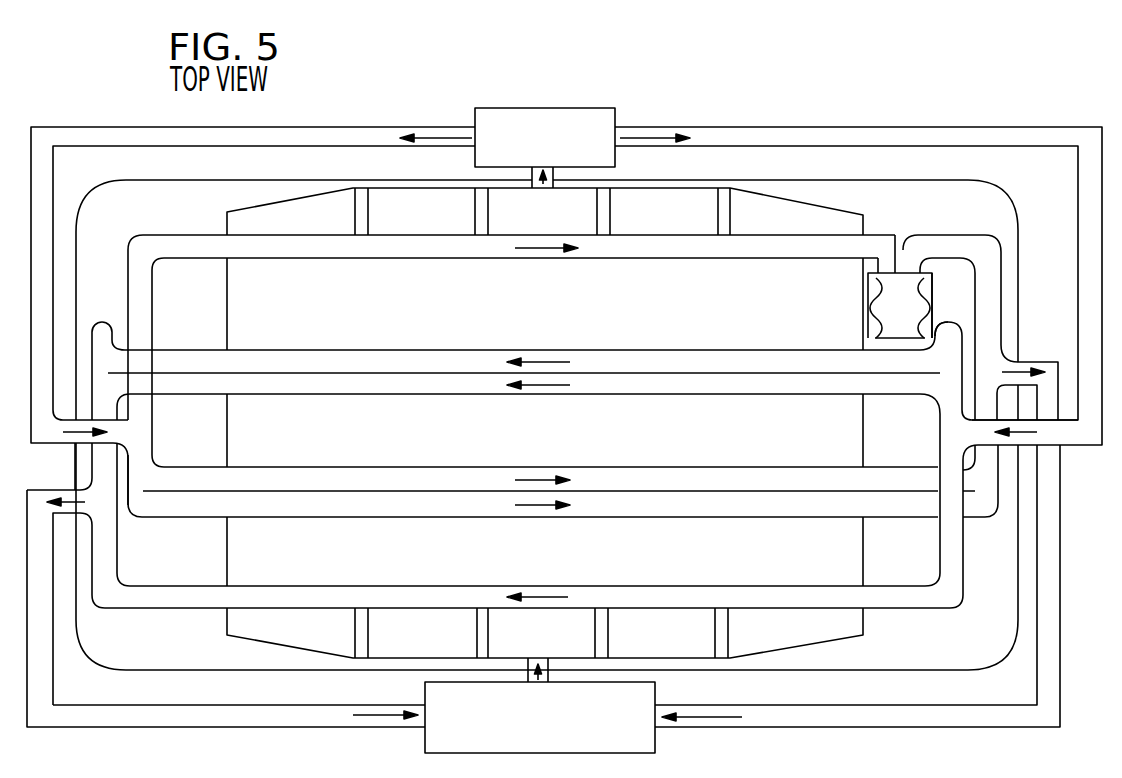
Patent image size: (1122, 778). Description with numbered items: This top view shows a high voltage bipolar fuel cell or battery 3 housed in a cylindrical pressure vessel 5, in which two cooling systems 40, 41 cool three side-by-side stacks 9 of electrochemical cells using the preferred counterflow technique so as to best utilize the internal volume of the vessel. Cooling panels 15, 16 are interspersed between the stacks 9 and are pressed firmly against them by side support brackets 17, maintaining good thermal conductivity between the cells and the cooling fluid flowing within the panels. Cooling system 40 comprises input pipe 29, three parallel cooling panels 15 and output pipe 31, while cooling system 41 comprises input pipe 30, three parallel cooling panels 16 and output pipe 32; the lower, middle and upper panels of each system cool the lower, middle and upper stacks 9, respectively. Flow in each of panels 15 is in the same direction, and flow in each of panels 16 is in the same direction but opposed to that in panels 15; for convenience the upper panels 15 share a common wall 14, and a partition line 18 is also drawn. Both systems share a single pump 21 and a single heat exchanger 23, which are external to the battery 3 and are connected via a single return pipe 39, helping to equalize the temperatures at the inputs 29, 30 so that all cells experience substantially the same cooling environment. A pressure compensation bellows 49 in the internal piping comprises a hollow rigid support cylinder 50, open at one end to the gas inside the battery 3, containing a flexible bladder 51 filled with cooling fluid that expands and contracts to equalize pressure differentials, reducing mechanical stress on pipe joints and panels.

The battery 3 is at (1021, 253).
The pressure vessel 5 is at (920, 181).
The stack 9 is at (649, 324).
The common wall 14 is at (430, 373).
The cooling panel 15 is at (388, 355).
The cooling panel 16 is at (797, 250).
The side support bracket 17 is at (673, 226).
The partition line 18 is at (815, 468).
The pump 21 is at (592, 108).
The heat exchanger 23 is at (655, 745).
The input pipe 29 is at (838, 137).
The input pipe 30 is at (350, 137).
The output pipe 31 is at (290, 720).
The output pipe 32 is at (833, 720).
The return pipe 39 is at (554, 187).
The cooling system 40 is at (97, 609).
The cooling system 41 is at (137, 239).
The pressure compensation bellows 49 is at (933, 292).
The support cylinder 50 is at (930, 318).
The bladder 51 is at (910, 324).